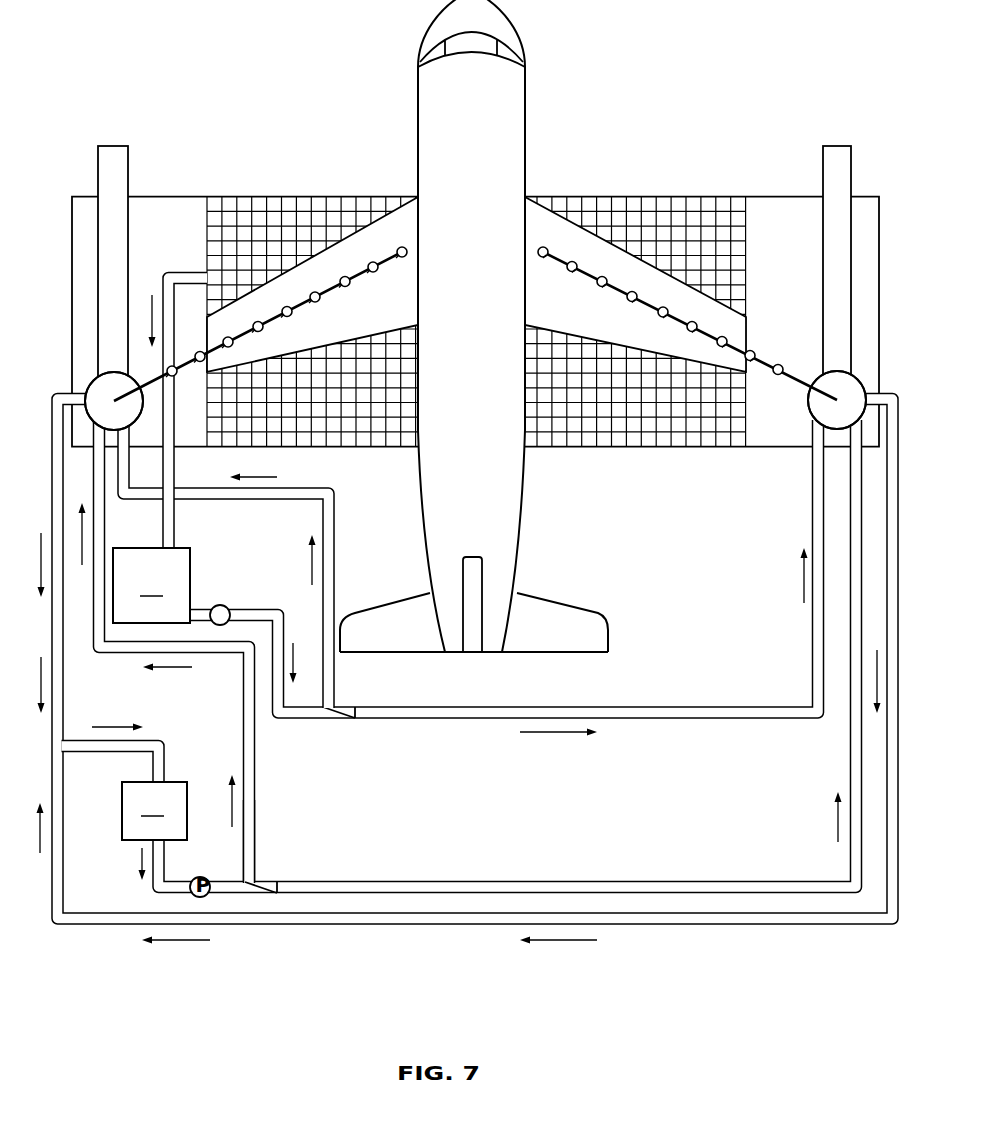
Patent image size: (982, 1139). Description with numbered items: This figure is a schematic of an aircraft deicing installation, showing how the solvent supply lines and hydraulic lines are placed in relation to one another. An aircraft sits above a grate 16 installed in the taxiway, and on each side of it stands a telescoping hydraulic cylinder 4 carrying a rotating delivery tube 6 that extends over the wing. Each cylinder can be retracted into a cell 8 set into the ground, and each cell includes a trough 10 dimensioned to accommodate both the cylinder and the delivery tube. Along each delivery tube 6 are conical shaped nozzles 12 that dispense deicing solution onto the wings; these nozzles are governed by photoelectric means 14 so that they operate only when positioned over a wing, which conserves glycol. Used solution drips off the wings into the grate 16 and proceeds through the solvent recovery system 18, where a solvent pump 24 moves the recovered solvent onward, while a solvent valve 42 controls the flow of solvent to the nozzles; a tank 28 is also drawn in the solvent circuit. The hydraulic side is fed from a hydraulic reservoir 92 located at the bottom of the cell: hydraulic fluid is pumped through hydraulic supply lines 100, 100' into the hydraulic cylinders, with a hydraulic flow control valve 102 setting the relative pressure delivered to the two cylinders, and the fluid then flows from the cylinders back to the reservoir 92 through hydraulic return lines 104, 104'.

The telescoping hydraulic cylinder 4 is at (100, 391).
The rotating delivery tube 6 is at (352, 278).
The cell 8 is at (110, 372).
The trough 10 is at (108, 170).
The conical shaped nozzle 12 is at (346, 286).
The photoelectric means 14 is at (256, 322).
The grate 16 is at (265, 215).
The solvent recovery system 18 is at (351, 566).
The solvent pump 24 is at (222, 604).
The fluid tank 28 is at (221, 493).
The solvent valve 42 is at (347, 708).
The hydraulic reservoir 92 is at (154, 811).
The hydraulic supply line 100 is at (508, 653).
The hydraulic supply line 100' is at (210, 651).
The hydraulic flow control valve 102 is at (270, 882).
The hydraulic return line 104 is at (596, 680).
The hydraulic return line 104' is at (154, 659).